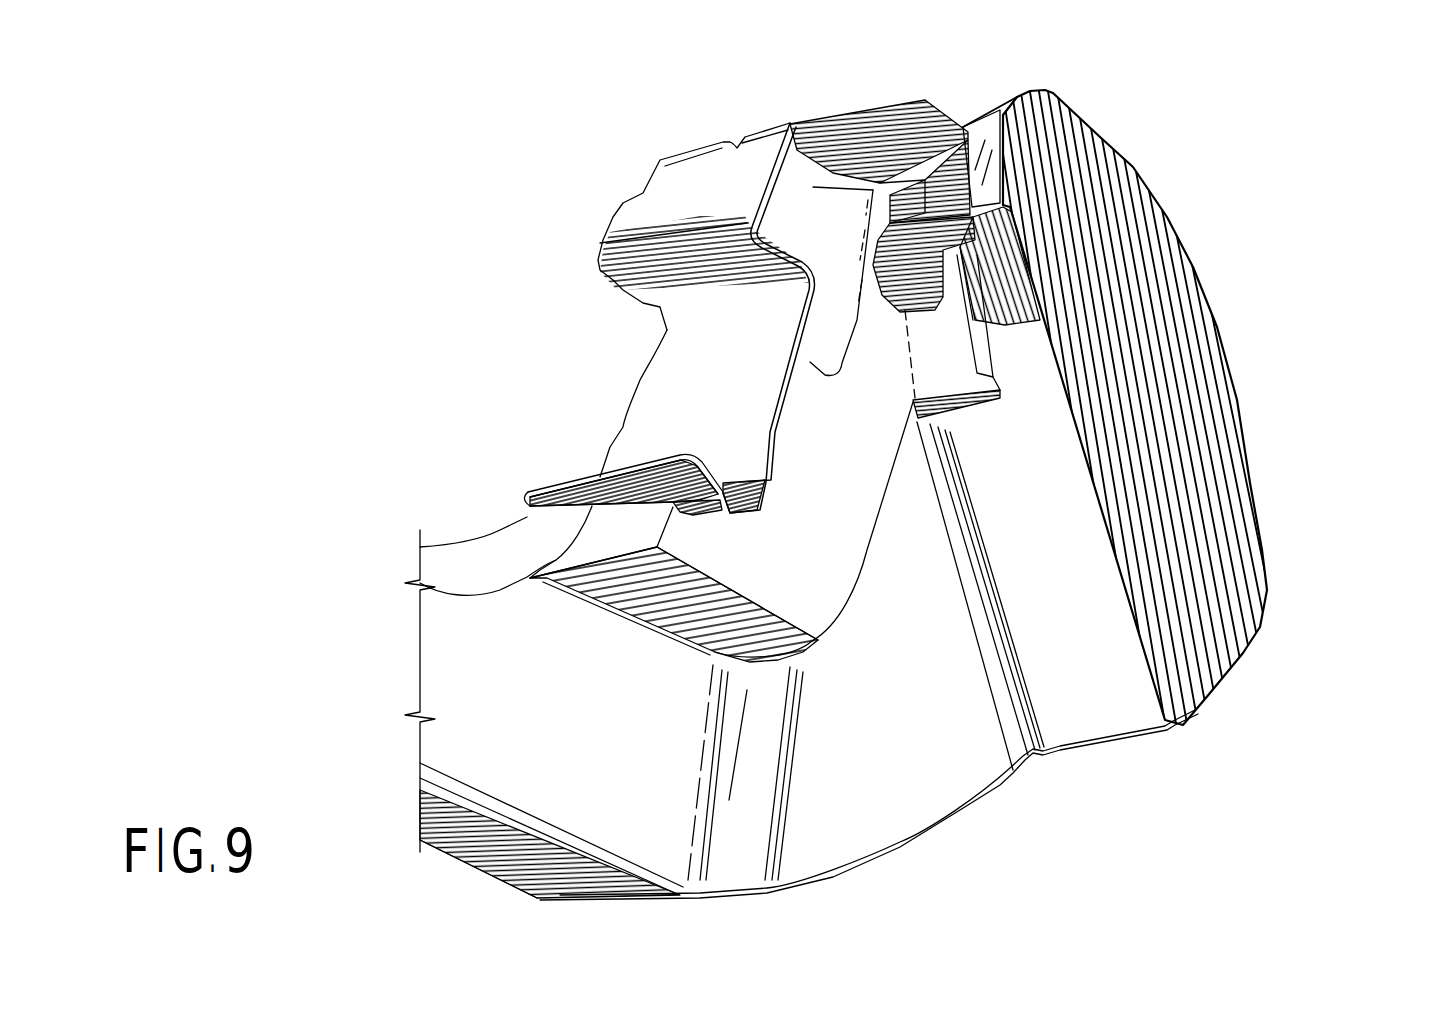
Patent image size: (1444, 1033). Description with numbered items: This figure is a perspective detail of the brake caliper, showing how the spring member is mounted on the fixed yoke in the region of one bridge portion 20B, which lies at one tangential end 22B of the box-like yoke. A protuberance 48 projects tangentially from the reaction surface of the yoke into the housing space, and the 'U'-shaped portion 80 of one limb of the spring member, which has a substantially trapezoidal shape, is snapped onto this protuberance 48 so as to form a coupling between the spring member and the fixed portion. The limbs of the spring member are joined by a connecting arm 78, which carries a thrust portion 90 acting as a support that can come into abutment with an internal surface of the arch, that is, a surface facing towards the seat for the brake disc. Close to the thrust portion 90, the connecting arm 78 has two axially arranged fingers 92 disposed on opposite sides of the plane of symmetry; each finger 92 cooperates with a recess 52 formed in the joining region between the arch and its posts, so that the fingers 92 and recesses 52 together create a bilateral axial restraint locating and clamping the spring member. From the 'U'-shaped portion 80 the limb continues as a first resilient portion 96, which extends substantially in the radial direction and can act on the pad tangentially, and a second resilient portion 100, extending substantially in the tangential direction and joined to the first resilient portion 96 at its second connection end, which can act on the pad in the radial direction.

The bridge portion 20B is at (1180, 380).
The tangential end 22B is at (1277, 690).
The protuberance 48 is at (793, 182).
The recess 52 is at (988, 300).
The connecting arm 78 is at (864, 137).
The 'U'-shaped portion 80 is at (683, 187).
The thrust portion 90 is at (938, 235).
The finger 92 is at (977, 115).
The first resilient portion 96 is at (675, 398).
The second resilient portion 100 is at (587, 477).